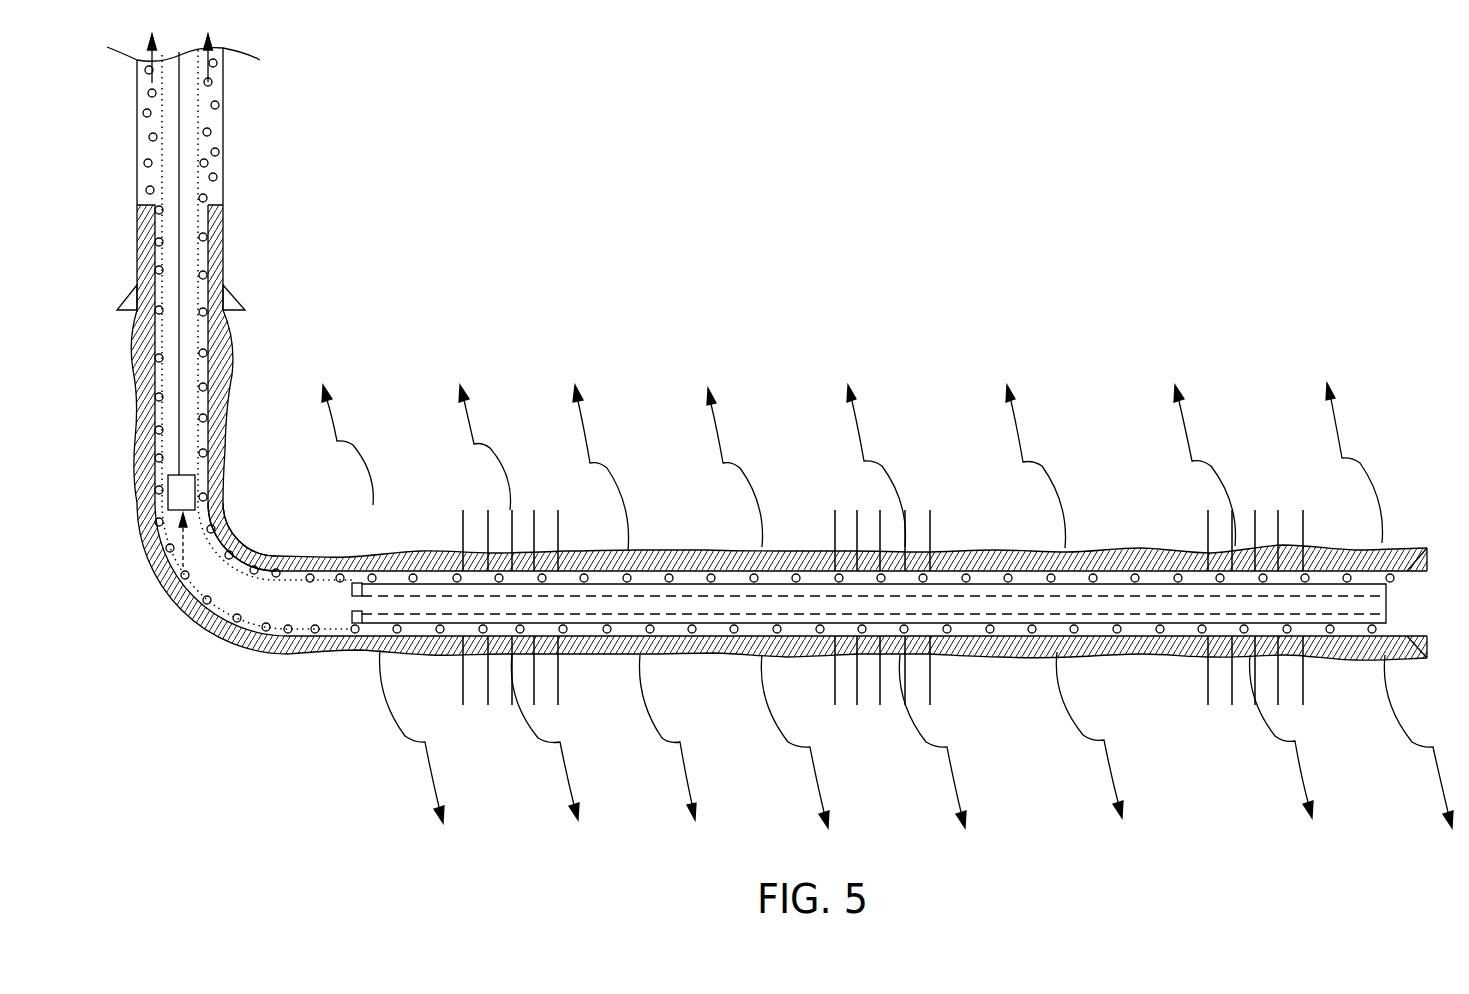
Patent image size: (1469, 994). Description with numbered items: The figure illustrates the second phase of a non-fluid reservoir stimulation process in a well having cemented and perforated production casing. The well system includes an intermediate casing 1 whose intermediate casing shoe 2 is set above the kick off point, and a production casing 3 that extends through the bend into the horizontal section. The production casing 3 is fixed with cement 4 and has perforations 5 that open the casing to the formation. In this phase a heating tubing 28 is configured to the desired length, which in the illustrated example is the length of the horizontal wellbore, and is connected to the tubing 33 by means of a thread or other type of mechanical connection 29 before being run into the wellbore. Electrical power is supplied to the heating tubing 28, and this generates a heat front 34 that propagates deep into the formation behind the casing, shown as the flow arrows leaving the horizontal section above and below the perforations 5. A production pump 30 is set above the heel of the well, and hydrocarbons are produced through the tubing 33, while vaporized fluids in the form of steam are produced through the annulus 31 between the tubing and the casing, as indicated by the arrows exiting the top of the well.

The intermediate casing 1 is at (224, 135).
The intermediate casing shoe 2 is at (245, 310).
The production casing 3 is at (212, 428).
The cement 4 is at (297, 552).
The perforations 5 is at (560, 524).
The heating tubing 28 is at (1388, 588).
The mechanical connection 29 is at (350, 618).
The production pump 30 is at (180, 513).
The annulus 31 is at (211, 80).
The tubing 33 is at (220, 548).
The heat front 34 is at (713, 428).